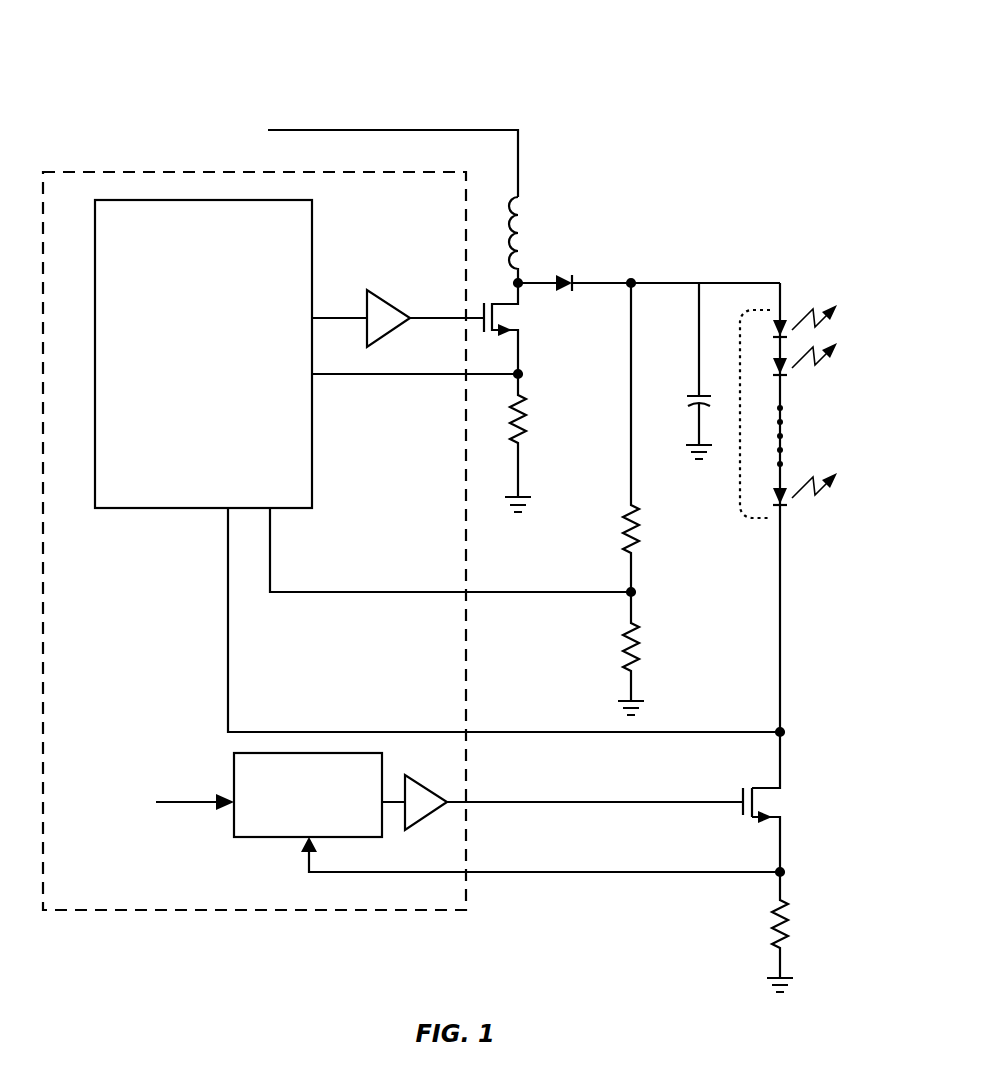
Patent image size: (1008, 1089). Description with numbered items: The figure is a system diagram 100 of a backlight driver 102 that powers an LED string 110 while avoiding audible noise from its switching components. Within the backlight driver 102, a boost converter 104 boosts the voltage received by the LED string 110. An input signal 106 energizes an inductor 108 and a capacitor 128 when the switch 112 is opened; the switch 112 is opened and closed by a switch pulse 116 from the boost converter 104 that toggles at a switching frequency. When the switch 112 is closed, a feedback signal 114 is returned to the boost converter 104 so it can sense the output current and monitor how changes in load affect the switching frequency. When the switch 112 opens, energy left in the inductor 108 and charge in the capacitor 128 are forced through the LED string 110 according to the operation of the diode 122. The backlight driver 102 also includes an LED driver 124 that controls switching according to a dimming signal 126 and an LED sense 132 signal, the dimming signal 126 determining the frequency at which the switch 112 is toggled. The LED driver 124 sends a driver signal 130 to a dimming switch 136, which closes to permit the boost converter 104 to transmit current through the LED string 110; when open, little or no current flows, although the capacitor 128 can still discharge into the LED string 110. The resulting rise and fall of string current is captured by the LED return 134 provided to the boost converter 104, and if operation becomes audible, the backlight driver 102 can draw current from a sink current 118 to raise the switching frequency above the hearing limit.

The system diagram 100 is at (193, 120).
The backlight driver 102 is at (254, 541).
The boost converter 104 is at (203, 354).
The input signal 106 is at (315, 130).
The inductor 108 is at (520, 198).
The LED string 110 is at (750, 311).
The switch 112 is at (497, 316).
The feedback signal 114 is at (400, 592).
The switch pulse 116 is at (422, 318).
The sink current 118 is at (336, 375).
The diode 122 is at (575, 283).
The LED driver 124 is at (308, 795).
The dimming signal 126 is at (184, 802).
The capacitor 128 is at (692, 403).
The driver signal 130 is at (573, 802).
The LED sense 132 is at (590, 872).
The LED return 134 is at (547, 732).
The dimming switch 136 is at (754, 787).